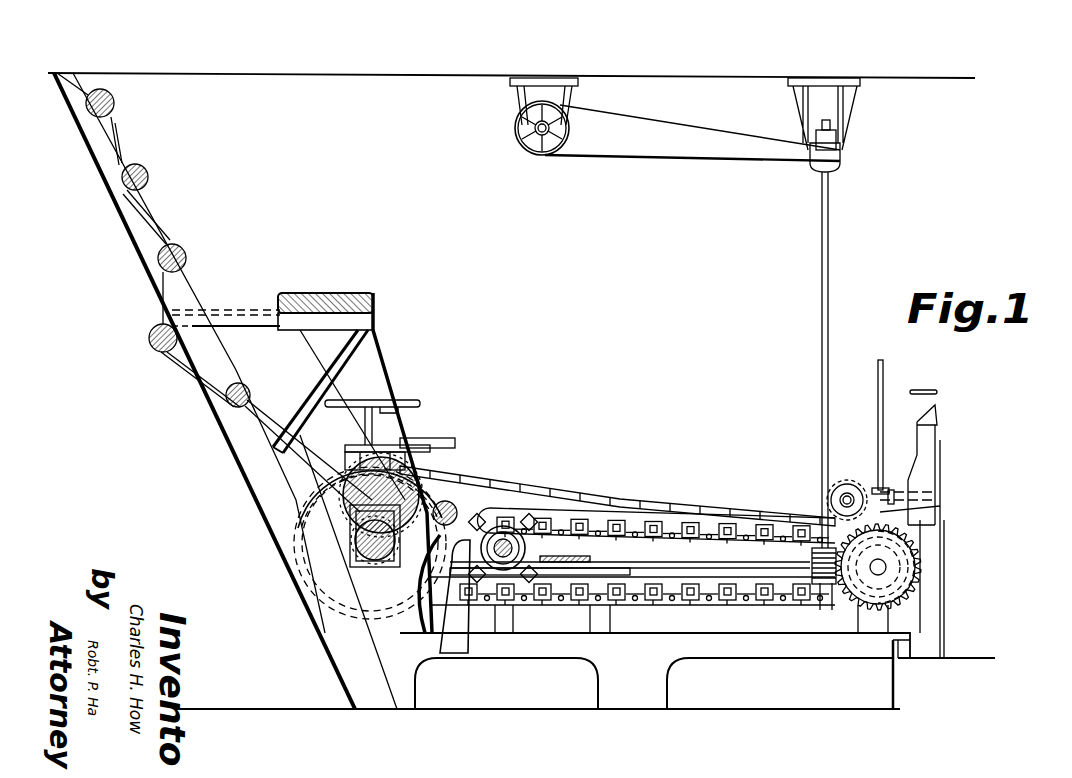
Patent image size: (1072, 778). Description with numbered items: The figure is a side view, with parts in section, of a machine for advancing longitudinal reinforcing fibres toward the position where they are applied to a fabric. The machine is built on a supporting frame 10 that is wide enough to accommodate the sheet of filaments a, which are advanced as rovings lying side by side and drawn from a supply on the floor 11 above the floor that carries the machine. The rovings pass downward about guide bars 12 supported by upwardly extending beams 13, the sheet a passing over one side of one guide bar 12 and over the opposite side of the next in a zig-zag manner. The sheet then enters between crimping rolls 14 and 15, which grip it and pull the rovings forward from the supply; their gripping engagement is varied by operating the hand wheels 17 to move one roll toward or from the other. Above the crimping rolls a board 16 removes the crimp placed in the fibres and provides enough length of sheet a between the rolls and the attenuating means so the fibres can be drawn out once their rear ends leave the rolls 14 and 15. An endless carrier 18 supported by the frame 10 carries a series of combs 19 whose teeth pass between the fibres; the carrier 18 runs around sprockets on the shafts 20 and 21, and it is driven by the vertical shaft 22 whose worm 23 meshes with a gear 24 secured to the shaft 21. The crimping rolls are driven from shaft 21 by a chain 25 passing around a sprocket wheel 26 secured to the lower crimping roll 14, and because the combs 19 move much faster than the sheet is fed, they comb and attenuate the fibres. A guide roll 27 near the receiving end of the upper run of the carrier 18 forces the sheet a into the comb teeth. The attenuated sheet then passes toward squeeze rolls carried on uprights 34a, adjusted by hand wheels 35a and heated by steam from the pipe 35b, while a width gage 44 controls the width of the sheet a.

The supporting frame 10 is at (520, 655).
The floor 11 is at (416, 79).
The guide bars 12 is at (115, 103).
The upwardly extending beams 13 is at (140, 251).
The lower crimping roll 14 is at (374, 550).
The crimping roll 15 is at (352, 508).
The board 16 is at (360, 293).
The hand wheels 17 is at (420, 402).
The endless carrier 18 is at (596, 530).
The combs 19 is at (552, 513).
The shaft 20 is at (527, 548).
The shaft 21 is at (886, 567).
The vertical shaft 22 is at (820, 308).
The worm 23 is at (810, 557).
The gear 24 is at (905, 590).
The chain 25 is at (500, 480).
The sprocket wheel 26 is at (426, 604).
The guide roll 27 is at (450, 500).
The uprights 34a is at (935, 452).
The hand wheels 35a is at (922, 388).
The pipe 35b is at (876, 405).
The width gage 44 is at (440, 443).
The sheet of filaments a is at (180, 287).